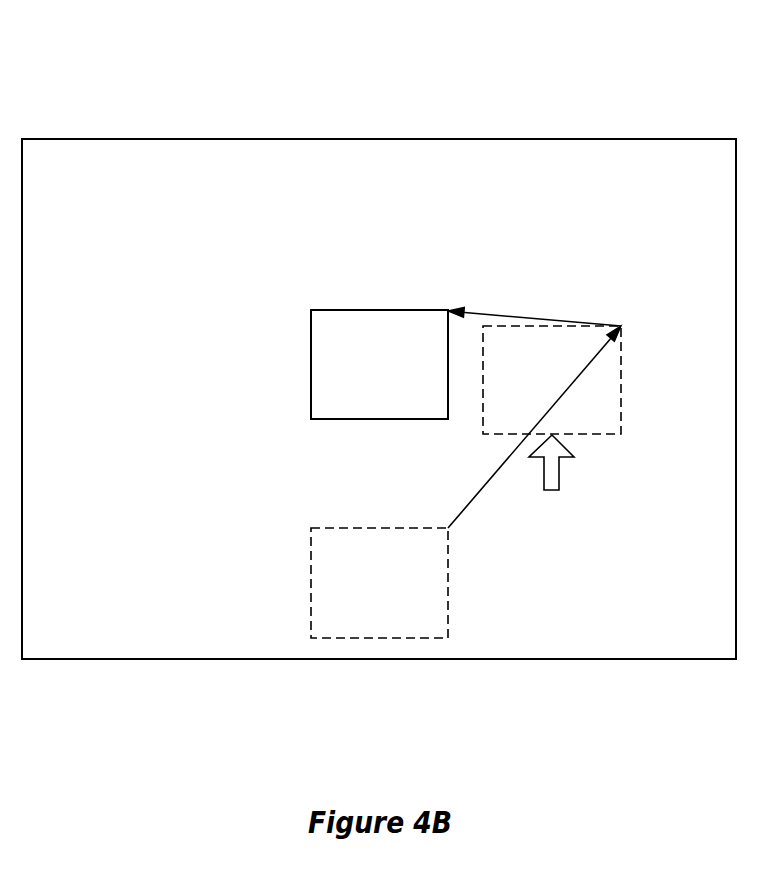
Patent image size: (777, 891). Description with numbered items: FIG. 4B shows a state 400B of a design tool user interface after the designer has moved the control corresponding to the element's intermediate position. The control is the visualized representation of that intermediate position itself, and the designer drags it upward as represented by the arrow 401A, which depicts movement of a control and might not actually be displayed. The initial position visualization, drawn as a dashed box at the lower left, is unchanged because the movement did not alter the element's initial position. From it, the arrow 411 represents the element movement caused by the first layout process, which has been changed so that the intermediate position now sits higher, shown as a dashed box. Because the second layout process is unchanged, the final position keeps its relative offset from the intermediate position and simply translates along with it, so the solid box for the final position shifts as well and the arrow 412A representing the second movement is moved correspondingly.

The state of the user interface 400B is at (353, 65).
The arrow 411 is at (474, 501).
The arrow 412A is at (510, 314).
The arrow 401A is at (560, 481).